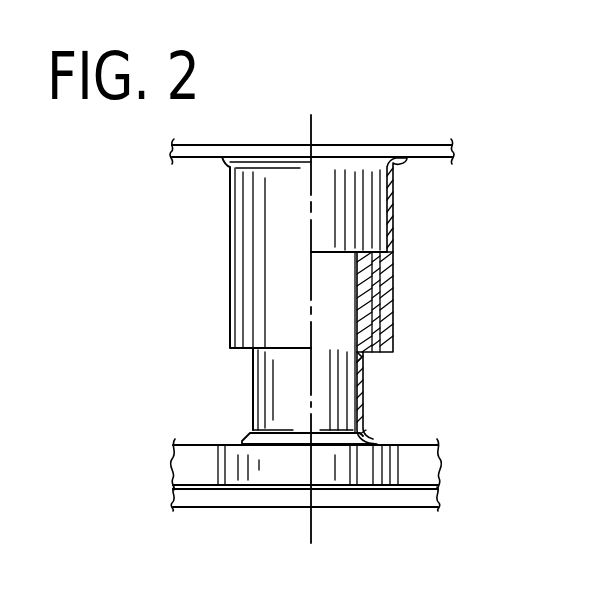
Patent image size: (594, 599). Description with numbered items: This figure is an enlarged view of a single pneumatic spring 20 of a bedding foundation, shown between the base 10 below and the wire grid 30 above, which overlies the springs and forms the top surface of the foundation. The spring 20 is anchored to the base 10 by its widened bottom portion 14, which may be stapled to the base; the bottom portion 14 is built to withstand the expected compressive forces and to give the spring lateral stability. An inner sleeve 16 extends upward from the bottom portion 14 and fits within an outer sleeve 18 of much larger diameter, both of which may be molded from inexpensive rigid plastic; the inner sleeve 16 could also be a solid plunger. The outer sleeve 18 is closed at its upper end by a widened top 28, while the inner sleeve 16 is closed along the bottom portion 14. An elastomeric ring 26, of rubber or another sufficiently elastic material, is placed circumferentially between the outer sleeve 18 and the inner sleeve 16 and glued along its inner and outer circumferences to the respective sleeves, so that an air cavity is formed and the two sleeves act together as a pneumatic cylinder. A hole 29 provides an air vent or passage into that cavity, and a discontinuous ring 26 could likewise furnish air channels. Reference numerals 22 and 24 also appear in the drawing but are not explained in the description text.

The base 10 is at (377, 509).
The widened bottom portion 14 is at (403, 453).
The inner sleeve 16 is at (360, 408).
The outer sleeve 18 is at (233, 223).
The pneumatic spring 20 is at (442, 215).
The grommet body 22 is at (393, 278).
The lip 24 is at (360, 362).
The elastomeric ring 26 is at (393, 301).
The widened top 28 is at (367, 163).
The hole 29 is at (393, 326).
The wire grid 30 is at (263, 144).